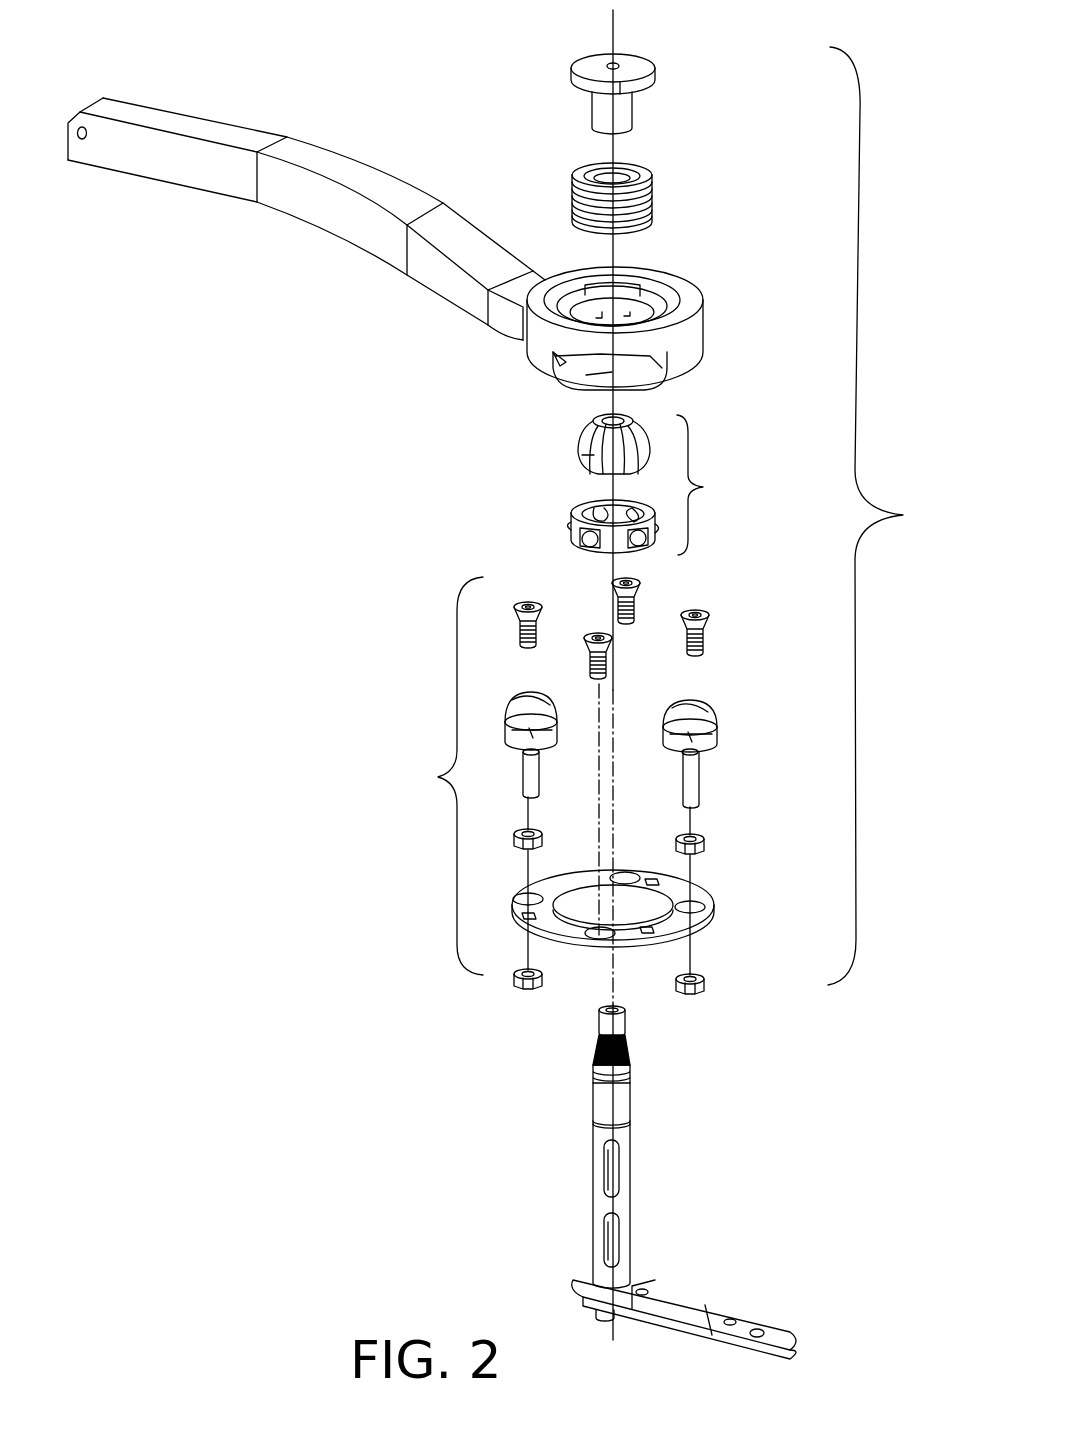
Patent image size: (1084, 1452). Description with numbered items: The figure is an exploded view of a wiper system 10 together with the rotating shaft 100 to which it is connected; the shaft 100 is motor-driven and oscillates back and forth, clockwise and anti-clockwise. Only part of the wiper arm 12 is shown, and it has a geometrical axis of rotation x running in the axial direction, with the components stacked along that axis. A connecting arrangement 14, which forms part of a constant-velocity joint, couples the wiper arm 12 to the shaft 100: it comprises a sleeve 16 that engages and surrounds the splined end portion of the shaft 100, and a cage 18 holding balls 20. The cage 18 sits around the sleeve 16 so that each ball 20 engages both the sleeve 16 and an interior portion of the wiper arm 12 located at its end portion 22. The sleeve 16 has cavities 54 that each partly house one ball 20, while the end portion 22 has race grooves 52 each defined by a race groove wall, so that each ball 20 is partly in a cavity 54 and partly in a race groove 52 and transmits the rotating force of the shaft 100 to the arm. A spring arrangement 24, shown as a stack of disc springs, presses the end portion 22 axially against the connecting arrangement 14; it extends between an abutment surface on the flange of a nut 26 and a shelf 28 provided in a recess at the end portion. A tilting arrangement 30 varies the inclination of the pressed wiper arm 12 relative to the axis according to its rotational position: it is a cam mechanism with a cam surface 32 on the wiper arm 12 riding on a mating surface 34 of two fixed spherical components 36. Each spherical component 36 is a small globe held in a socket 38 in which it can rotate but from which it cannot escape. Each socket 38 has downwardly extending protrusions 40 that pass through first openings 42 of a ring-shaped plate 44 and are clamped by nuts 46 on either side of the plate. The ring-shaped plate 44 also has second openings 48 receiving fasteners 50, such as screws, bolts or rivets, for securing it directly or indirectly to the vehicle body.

The wiper system 10 is at (883, 516).
The wiper arm 12 is at (178, 152).
The connecting arrangement 14 is at (612, 487).
The sleeve 16 is at (587, 440).
The cage 18 is at (580, 505).
The balls 20 is at (580, 542).
The end portion 22 is at (590, 593).
The spring arrangement 24 is at (655, 196).
The nut 26 is at (655, 75).
The shelf 28 is at (640, 300).
The tilting arrangement 30 is at (572, 368).
The cam surface 32 is at (612, 372).
The mating surface 34 is at (650, 732).
The fixed spherical components 36 is at (705, 722).
The socket 38 is at (700, 741).
The protrusions 40 is at (700, 781).
The first openings 42 is at (649, 945).
The ring-shaped plate 44 is at (690, 895).
The nuts 46 is at (700, 990).
The second openings 48 is at (590, 935).
The fasteners 50 is at (700, 643).
The race grooves 52 is at (660, 330).
The cavities 54 is at (582, 455).
The rotating shaft 100 is at (600, 1207).